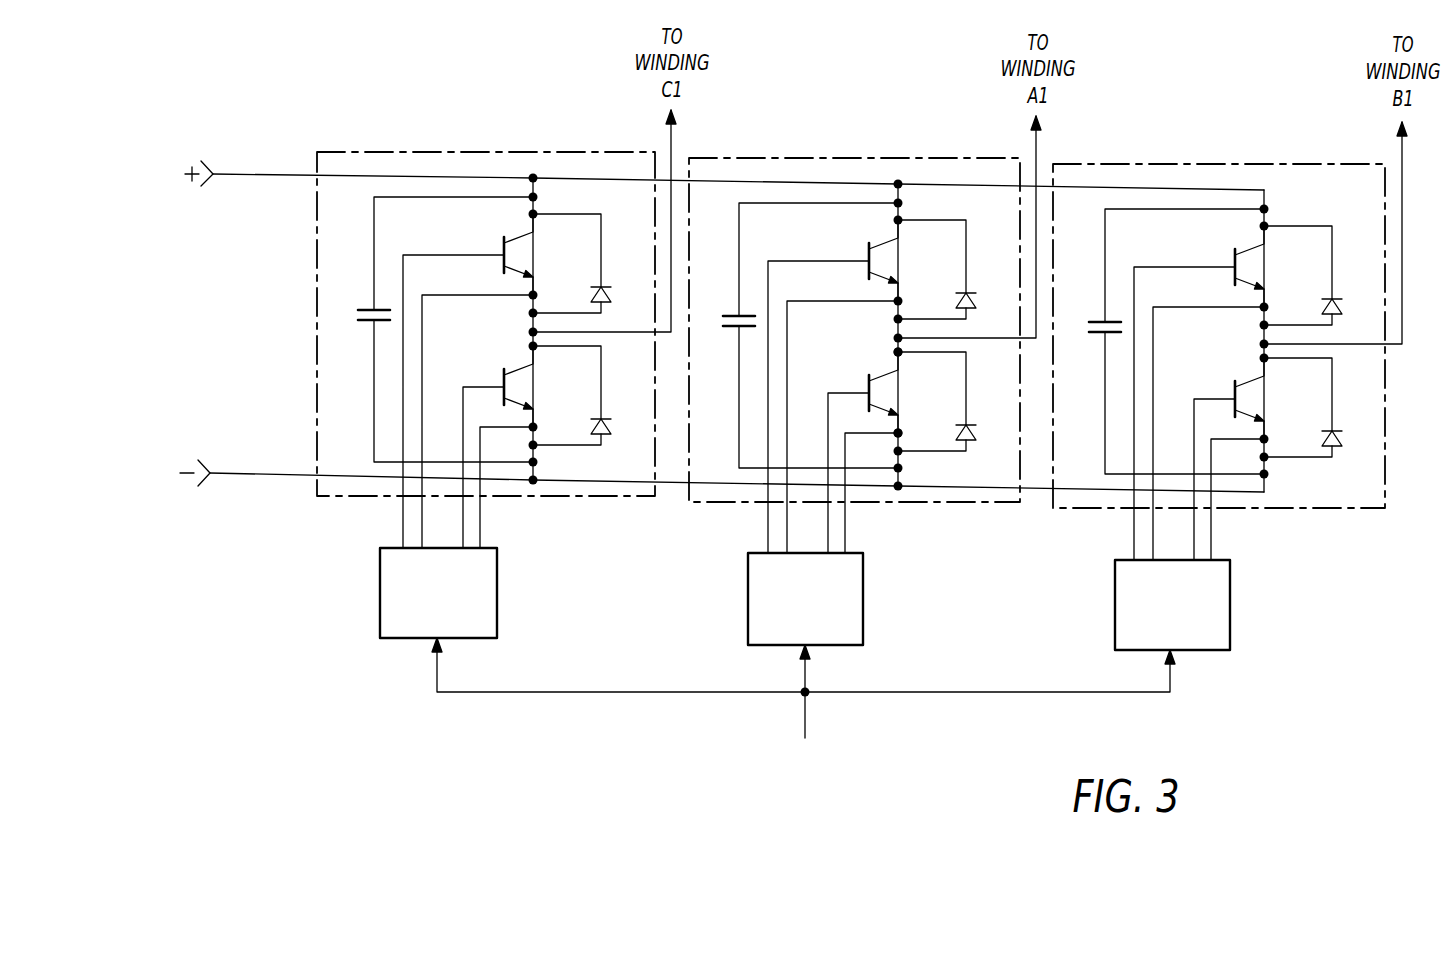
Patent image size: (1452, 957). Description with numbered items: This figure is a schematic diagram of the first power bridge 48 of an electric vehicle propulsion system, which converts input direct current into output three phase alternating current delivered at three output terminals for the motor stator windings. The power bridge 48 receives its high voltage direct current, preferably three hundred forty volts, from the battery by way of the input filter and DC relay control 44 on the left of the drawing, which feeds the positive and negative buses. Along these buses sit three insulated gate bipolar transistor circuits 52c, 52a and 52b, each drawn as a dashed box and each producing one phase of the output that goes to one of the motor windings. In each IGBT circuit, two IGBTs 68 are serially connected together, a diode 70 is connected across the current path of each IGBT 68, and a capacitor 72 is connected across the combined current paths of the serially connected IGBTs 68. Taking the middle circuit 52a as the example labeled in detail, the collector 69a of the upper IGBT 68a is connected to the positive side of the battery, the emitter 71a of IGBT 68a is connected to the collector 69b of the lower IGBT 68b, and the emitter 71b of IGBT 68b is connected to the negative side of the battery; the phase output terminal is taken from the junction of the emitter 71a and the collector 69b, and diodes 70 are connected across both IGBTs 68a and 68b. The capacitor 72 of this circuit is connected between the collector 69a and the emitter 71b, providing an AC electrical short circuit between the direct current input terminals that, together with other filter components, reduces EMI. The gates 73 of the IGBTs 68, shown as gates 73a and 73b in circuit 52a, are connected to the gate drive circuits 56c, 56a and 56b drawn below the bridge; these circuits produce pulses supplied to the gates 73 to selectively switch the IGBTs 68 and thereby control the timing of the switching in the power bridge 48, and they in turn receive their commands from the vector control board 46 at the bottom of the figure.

The first power bridge 48 is at (339, 90).
The input filter and DC relay control 44 is at (180, 334).
The vector control board 46 is at (803, 744).
The IGBT circuit 52a is at (868, 158).
The IGBT circuit 52b is at (1232, 164).
The IGBT circuit 52c is at (503, 152).
The gate drive circuit 56a is at (864, 578).
The gate drive circuit 56b is at (1231, 583).
The gate drive circuit 56c is at (498, 572).
The IGBT 68 is at (516, 229).
The IGBT 68a is at (883, 235).
The IGBT 68b is at (880, 366).
The collector 69a is at (902, 243).
The collector 69b is at (900, 374).
The diode 70 is at (608, 296).
The emitter 71a is at (904, 283).
The emitter 71b is at (902, 412).
The capacitor 72 is at (359, 314).
The gate 73 is at (503, 240).
The gate of upper transistor 73a is at (868, 246).
The gate of lower transistor 73b is at (866, 377).